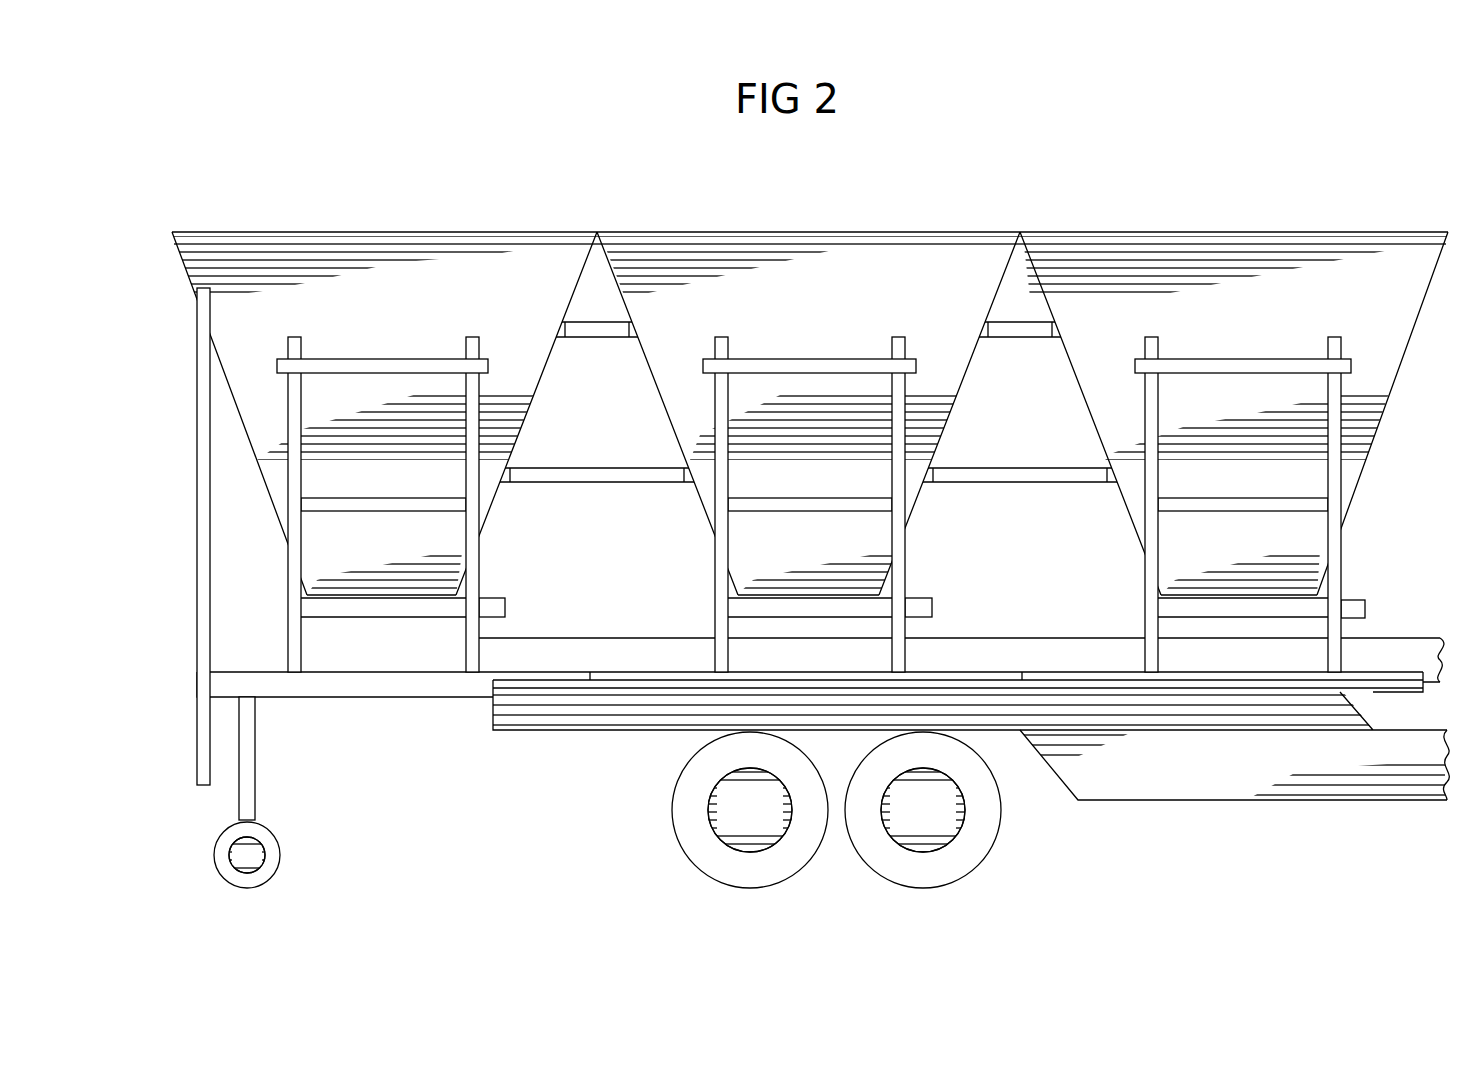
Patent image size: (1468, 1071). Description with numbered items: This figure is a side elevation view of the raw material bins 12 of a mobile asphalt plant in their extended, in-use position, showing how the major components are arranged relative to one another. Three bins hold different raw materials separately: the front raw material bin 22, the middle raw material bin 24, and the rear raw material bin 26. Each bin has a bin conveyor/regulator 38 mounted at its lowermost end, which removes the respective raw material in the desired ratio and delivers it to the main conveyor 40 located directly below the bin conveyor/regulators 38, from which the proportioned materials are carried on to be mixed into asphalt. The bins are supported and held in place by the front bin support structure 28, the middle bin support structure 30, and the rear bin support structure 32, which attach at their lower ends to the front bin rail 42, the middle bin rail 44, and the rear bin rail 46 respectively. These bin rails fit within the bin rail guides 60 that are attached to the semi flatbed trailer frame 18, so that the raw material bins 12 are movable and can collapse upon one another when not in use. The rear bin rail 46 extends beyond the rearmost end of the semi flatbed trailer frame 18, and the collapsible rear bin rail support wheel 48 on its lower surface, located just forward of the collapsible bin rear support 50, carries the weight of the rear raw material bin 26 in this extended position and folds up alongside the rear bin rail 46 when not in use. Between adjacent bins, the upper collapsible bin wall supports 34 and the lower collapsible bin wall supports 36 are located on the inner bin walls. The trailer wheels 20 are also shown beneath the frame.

The raw material bins 12 is at (660, 186).
The semi flatbed trailer frame 18 is at (1213, 770).
The wheels 20 is at (878, 875).
The front raw material bin 22 is at (1268, 306).
The middle raw material bin 24 is at (845, 297).
The rear raw material bin 26 is at (423, 296).
The front bin support structure 28 is at (1218, 355).
The middle bin support structure 30 is at (783, 352).
The rear bin support structure 32 is at (385, 352).
The upper collapsible bin wall supports 34 is at (593, 341).
The lower collapsible bin wall supports 36 is at (588, 487).
The bin conveyor/regulator 38 is at (750, 605).
The main conveyor 40 is at (1388, 660).
The front bin rail 42 is at (1183, 676).
The middle bin rail 44 is at (700, 677).
The rear bin rail 46 is at (437, 703).
The collapsible rear bin rail support wheel 48 is at (285, 845).
The collapsible bin rear support 50 is at (190, 768).
The bin rail guides 60 is at (620, 687).